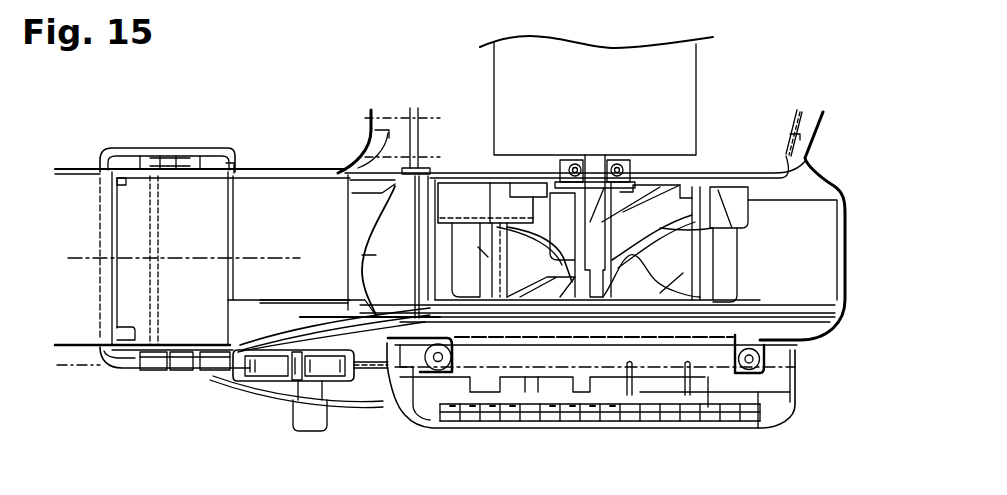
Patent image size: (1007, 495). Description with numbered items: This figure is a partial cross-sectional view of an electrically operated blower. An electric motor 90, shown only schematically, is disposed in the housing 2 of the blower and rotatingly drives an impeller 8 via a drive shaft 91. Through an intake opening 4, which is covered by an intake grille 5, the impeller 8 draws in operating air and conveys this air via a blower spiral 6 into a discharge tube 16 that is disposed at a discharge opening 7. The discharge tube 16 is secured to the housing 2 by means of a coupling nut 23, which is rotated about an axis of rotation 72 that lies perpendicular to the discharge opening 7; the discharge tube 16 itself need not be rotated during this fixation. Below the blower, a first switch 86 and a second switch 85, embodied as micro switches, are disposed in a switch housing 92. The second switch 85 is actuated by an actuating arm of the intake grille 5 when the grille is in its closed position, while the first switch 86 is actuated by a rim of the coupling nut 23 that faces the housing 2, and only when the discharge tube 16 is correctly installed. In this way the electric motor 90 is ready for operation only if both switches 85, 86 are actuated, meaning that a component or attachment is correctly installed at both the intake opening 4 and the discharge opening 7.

The housing 2 is at (373, 164).
The intake opening 4 is at (536, 353).
The intake grille 5 is at (640, 412).
The blower spiral 6 is at (824, 232).
The discharge opening 7 is at (237, 214).
The impeller 8 is at (712, 262).
The discharge tube 16 is at (70, 167).
The coupling nut 23 is at (160, 146).
The axis of rotation 72 is at (263, 249).
The second switch 85 is at (330, 366).
The first switch 86 is at (262, 365).
The electric motor 90 is at (675, 105).
The drive shaft 91 is at (598, 205).
The switch housing 92 is at (298, 378).